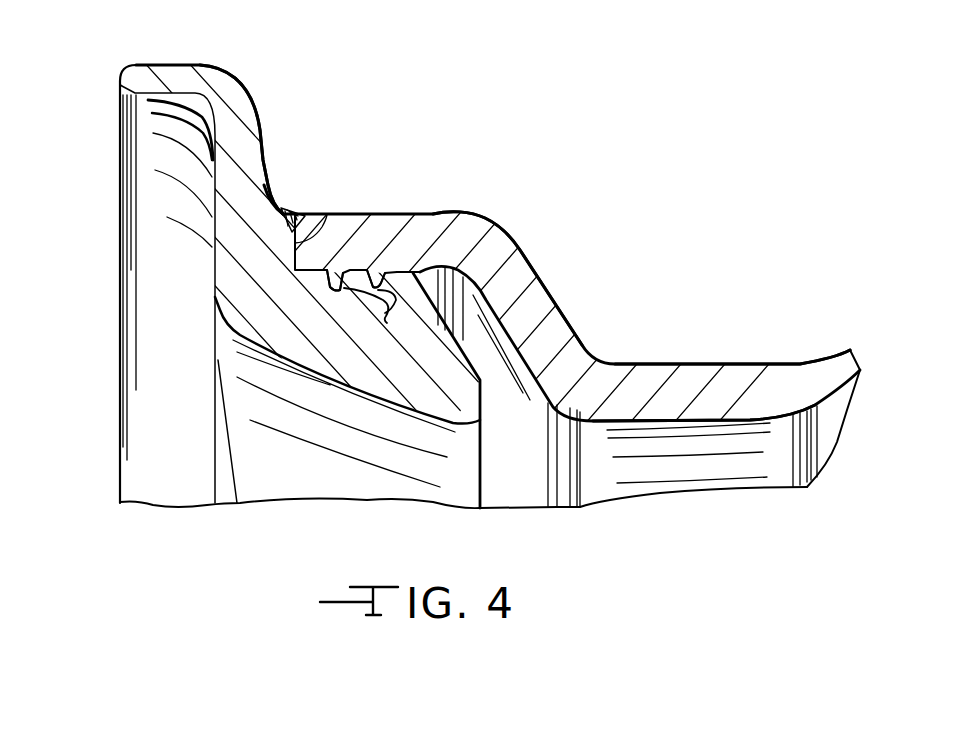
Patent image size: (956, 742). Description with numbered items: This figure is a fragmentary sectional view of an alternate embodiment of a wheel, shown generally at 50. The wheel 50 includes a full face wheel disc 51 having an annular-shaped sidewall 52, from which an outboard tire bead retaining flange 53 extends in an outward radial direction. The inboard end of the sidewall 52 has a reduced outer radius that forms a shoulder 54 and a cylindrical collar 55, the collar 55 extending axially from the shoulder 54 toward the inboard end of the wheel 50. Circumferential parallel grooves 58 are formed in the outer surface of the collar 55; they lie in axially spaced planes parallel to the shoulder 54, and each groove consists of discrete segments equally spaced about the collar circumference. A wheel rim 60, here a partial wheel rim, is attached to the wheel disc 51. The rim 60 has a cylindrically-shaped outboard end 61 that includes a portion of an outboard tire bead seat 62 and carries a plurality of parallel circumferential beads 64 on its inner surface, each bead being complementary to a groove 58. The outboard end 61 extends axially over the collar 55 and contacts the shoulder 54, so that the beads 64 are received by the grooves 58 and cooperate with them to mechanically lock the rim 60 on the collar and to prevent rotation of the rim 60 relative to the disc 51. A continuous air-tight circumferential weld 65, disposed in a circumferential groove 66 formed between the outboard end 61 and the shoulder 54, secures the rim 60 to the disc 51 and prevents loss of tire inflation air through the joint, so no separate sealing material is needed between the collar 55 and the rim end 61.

The wheel 50 is at (540, 177).
The full face wheel disc 51 is at (150, 408).
The annular-shaped sidewall 52 is at (343, 367).
The outboard tire bead retaining flange 53 is at (228, 103).
The shoulder 54 is at (305, 243).
The cylindrical collar 55 is at (405, 268).
The circumferential parallel grooves 58 is at (346, 292).
The wheel rim 60 is at (690, 378).
The cylindrically-shaped outboard end 61 is at (328, 228).
The outboard tire bead seat 62 is at (377, 280).
The parallel circumferential beads 64 is at (340, 270).
The circumferential weld 65 is at (282, 210).
The circumferential groove 66 is at (283, 217).